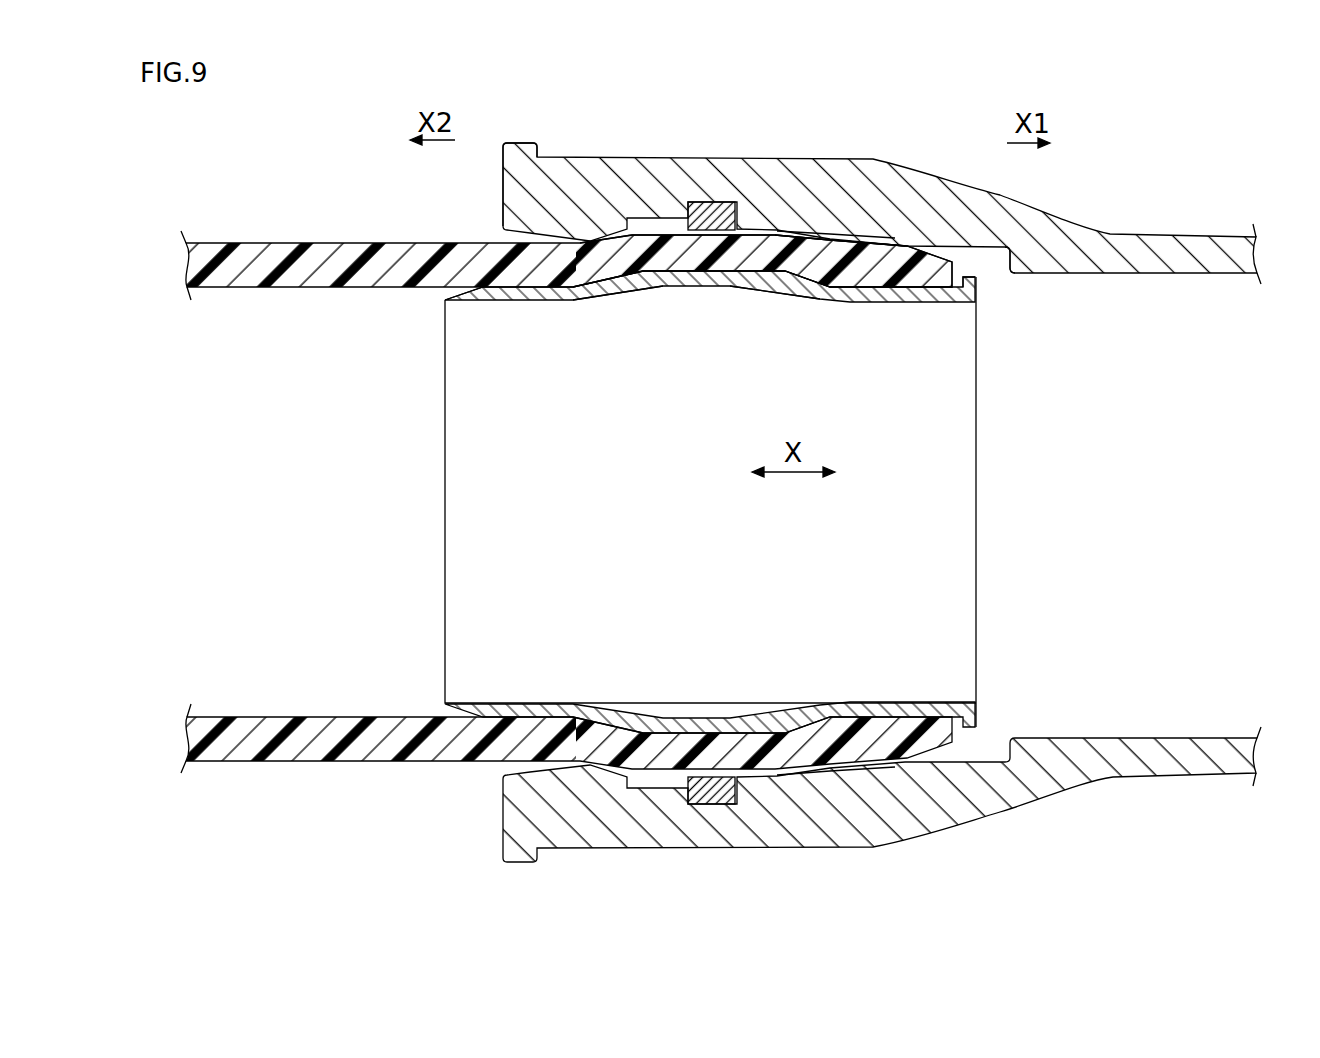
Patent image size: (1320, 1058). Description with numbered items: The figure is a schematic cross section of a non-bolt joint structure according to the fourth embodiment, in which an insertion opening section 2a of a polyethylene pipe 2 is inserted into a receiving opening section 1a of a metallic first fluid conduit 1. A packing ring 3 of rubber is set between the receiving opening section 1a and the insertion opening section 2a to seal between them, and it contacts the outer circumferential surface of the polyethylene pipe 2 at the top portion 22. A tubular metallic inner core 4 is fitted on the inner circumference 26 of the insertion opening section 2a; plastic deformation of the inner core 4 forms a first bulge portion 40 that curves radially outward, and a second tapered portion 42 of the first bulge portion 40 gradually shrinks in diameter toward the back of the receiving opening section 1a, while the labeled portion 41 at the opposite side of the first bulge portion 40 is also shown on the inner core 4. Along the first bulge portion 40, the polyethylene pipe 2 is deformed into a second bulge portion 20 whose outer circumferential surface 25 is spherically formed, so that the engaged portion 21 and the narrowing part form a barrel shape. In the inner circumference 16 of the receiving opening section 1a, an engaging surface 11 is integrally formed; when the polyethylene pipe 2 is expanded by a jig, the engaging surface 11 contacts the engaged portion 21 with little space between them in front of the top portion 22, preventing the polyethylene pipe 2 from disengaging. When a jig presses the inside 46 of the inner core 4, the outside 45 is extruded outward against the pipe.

The first fluid conduit 1 is at (923, 158).
The receiving opening section 1a is at (567, 157).
The polyethylene pipe 2 is at (263, 242).
The insertion opening section 2a is at (815, 236).
The packing ring 3 is at (717, 200).
The inner core 4 is at (960, 425).
The engaging surface 11 is at (612, 247).
The inner circumference 16 is at (982, 248).
The second bulge portion 20 is at (775, 240).
The engaged portion 21 is at (593, 258).
The top portion 22 is at (718, 240).
The outer circumferential surface 25 is at (790, 245).
The inner circumference 26 is at (797, 278).
The first bulge portion 40 is at (688, 282).
The first end of ring member 41 is at (591, 272).
The second tapered portion 42 is at (840, 268).
The outside 45 is at (645, 250).
The inside 46 is at (768, 286).